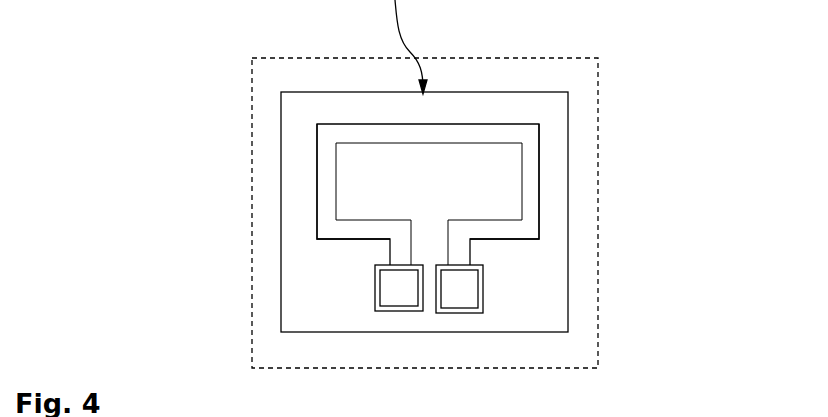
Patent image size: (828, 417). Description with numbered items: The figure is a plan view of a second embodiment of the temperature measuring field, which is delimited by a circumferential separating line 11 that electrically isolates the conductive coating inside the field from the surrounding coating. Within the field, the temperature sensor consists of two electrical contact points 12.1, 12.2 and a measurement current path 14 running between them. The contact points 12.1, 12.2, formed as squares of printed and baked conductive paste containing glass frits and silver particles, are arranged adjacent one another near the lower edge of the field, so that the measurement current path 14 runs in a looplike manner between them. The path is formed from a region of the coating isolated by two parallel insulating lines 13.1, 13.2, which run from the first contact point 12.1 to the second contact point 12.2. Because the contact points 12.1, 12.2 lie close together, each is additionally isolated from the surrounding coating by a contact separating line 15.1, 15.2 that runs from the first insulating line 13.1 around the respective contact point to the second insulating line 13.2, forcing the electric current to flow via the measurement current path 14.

The circumferential separating line 11 is at (568, 160).
The measurement current path 14 is at (477, 137).
The first insulating line 13.1 is at (317, 158).
The second insulating line 13.2 is at (543, 200).
The first electrical contact point 12.1 is at (375, 295).
The second electrical contact point 12.2 is at (483, 300).
The first contact separating line 15.1 is at (375, 272).
The second contact separating line 15.2 is at (483, 273).